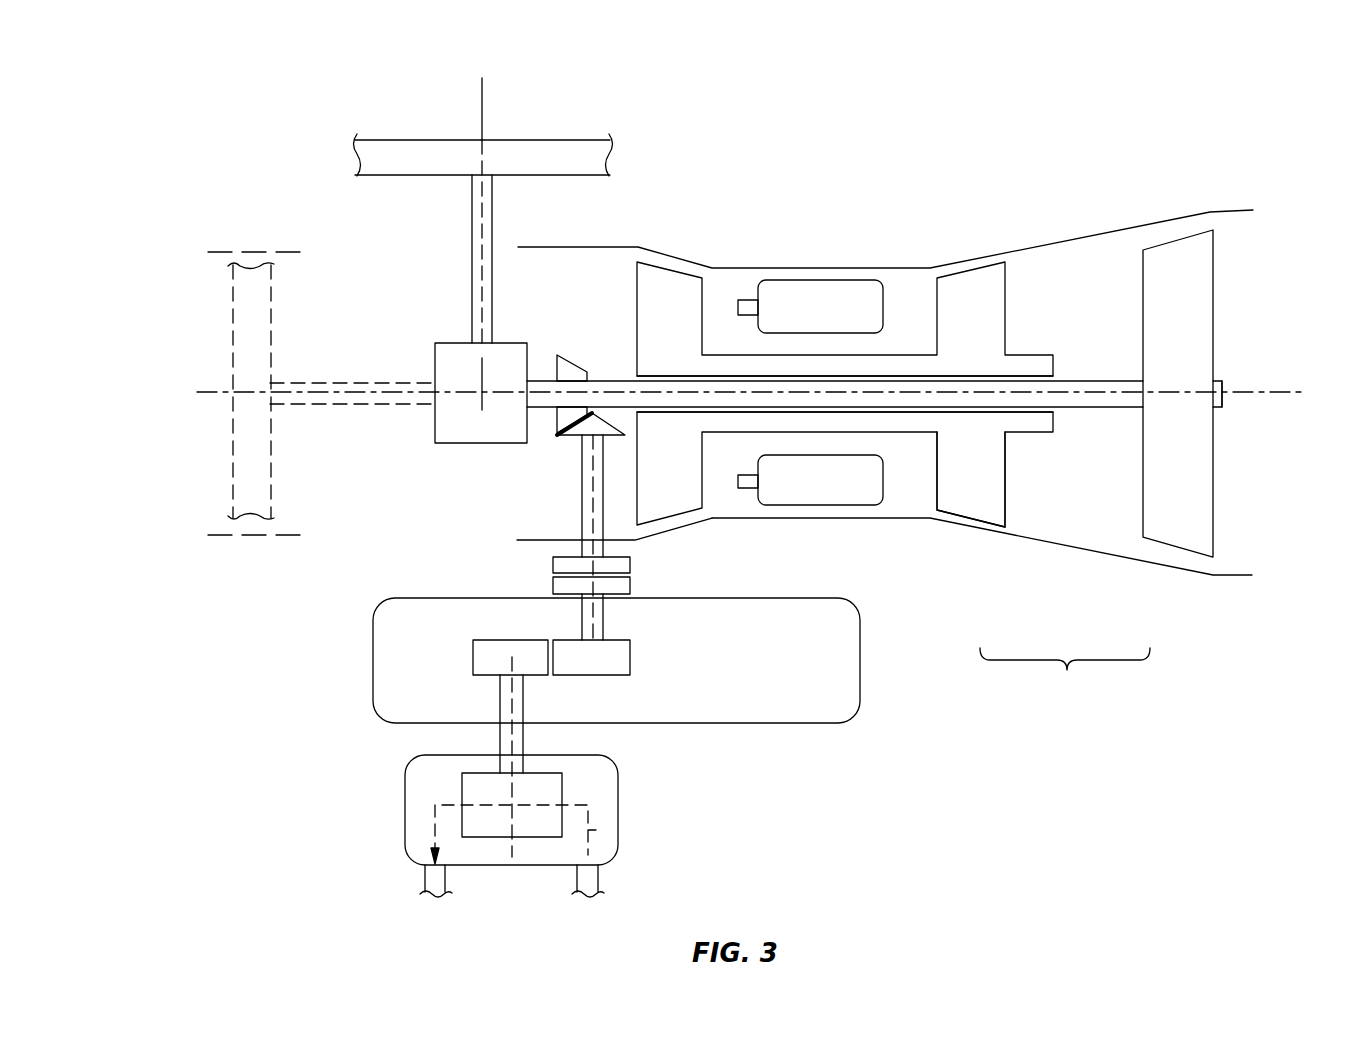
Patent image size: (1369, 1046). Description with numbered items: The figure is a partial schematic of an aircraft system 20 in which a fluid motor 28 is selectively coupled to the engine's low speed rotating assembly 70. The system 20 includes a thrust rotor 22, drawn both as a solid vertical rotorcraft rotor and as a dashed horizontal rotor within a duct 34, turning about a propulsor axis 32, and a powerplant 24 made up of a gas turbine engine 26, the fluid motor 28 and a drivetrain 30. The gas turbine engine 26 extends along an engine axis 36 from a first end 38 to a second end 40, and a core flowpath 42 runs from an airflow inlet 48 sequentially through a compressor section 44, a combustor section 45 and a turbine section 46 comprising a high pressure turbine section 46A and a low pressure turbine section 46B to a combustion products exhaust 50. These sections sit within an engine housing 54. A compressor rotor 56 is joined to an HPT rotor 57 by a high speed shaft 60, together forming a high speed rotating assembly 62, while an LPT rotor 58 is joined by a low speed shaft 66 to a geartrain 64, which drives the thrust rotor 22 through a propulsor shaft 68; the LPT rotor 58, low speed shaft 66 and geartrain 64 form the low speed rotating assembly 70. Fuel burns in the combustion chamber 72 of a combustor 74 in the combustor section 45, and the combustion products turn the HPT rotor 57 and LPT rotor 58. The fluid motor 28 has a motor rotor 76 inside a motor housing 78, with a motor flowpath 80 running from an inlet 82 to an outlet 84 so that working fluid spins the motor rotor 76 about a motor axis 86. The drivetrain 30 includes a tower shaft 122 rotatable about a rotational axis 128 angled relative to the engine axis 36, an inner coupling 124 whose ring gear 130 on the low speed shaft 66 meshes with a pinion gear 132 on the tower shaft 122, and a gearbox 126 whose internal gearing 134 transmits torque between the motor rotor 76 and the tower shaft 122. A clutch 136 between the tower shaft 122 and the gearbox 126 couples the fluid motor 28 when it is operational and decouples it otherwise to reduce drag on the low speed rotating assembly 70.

The system 20 is at (187, 110).
The thrust rotor 22 is at (610, 125).
The powerplant 24 is at (935, 170).
The gas turbine engine 26 is at (955, 225).
The fluid motor 28 is at (395, 840).
The drivetrain 30 is at (345, 670).
The propulsor axis 32 is at (473, 88).
The duct 34 is at (253, 250).
The engine axis 36 is at (1298, 400).
The first end 38 is at (517, 540).
The second end 40 is at (1250, 577).
The core flowpath 42 is at (549, 298).
The compressor section 44 is at (682, 533).
The combustor section 45 is at (810, 532).
The turbine section 46 is at (1065, 675).
The high pressure turbine section 46A is at (985, 545).
The low pressure turbine section 46B is at (1172, 578).
The airflow inlet 48 is at (520, 495).
The combustion products exhaust 50 is at (1268, 514).
The engine housing 54 is at (730, 258).
The compressor rotor 56 is at (658, 493).
The HPT rotor 57 is at (954, 476).
The LPT rotor 58 is at (1164, 486).
The high speed shaft 60 is at (888, 432).
The high speed rotating assembly 62 is at (1030, 443).
The geartrain 64 is at (486, 428).
The low speed shaft 66 is at (1097, 407).
The propulsor shaft 68 is at (472, 283).
The low speed rotating assembly 70 is at (1225, 368).
The combustion chamber 72 is at (806, 320).
The combustor 74 is at (818, 275).
The motor rotor 76 is at (562, 790).
The motor housing 78 is at (405, 790).
The motor flowpath 80 is at (600, 832).
The inlet 82 is at (598, 868).
The outlet 84 is at (425, 868).
The motor axis 86 is at (512, 840).
The tower shaft 122 is at (577, 510).
The inner coupling 124 is at (550, 443).
The gearbox 126 is at (880, 695).
The rotational axis 128 is at (597, 528).
The ring gear 130 is at (572, 363).
The pinion gear 132 is at (612, 428).
The internal gearing 134 is at (643, 660).
The clutch 136 is at (550, 575).